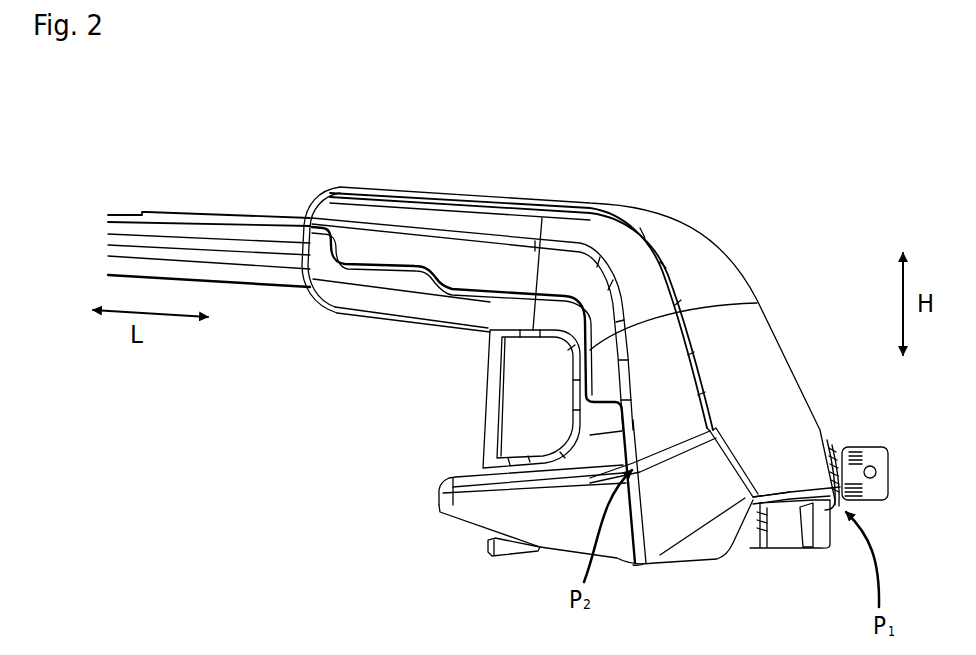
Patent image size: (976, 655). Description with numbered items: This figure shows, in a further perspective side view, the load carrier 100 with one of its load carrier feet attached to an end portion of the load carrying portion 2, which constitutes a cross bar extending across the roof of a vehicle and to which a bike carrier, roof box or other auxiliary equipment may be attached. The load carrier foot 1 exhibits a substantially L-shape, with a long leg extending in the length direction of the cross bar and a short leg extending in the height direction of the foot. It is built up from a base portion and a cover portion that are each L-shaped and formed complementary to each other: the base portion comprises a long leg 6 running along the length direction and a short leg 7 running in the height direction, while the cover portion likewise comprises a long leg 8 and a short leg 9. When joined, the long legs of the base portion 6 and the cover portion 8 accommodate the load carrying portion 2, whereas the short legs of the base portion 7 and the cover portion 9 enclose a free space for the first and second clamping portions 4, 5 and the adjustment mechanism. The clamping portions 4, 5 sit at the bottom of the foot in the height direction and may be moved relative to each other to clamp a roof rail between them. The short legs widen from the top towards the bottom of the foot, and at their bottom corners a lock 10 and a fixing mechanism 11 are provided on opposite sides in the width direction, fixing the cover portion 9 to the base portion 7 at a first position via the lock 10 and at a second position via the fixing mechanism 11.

The load carrier foot 1 is at (428, 432).
The load carrying portion 2 is at (163, 245).
The first clamping portion 4 is at (752, 549).
The second clamping portion 5 is at (498, 556).
The long leg of the base portion 6 is at (367, 300).
The short leg of the base portion 7 is at (603, 453).
The long leg of the cover portion 8 is at (428, 215).
The short leg of the cover portion 9 is at (657, 370).
The lock 10 is at (838, 452).
The fixing mechanism 11 is at (650, 470).
The load carrier 100 is at (203, 425).